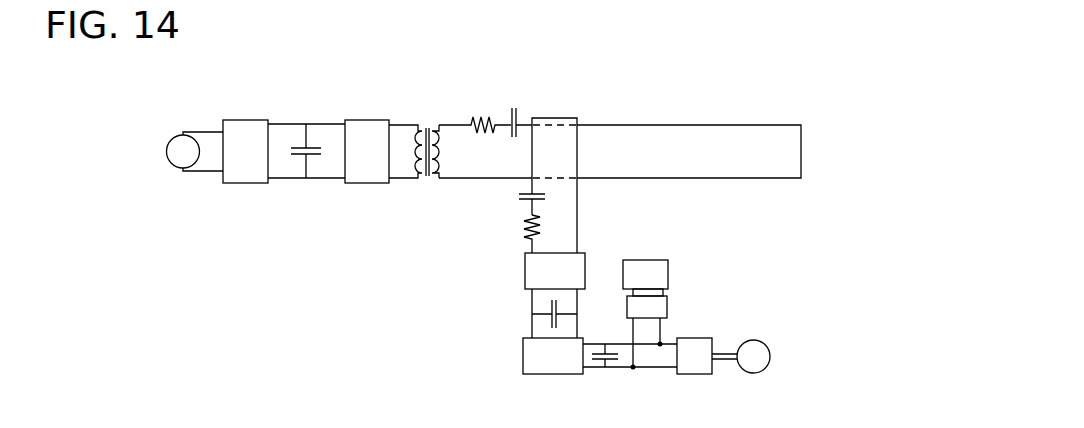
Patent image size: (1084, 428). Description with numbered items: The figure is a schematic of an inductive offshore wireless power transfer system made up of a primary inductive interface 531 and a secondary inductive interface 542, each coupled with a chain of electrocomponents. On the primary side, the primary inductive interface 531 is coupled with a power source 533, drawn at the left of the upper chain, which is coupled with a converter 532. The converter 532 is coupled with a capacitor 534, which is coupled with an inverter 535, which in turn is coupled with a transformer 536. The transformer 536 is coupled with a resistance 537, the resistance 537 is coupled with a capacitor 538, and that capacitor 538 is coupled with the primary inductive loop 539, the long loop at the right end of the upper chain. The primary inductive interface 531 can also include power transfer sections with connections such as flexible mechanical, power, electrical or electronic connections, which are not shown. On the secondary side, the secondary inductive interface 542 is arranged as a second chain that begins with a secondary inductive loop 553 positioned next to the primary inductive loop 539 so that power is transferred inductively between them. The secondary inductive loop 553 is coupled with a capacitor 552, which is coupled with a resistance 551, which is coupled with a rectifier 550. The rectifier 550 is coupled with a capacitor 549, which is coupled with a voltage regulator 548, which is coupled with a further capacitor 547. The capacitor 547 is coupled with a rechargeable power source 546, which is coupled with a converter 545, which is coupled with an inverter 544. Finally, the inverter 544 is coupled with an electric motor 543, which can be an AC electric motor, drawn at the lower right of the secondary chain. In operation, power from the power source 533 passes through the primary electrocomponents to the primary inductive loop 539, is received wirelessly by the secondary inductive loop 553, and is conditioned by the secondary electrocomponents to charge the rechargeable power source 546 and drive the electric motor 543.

The primary inductive interface 531 is at (784, 79).
The converter 532 is at (246, 120).
The power source 533 is at (177, 135).
The capacitor 534 is at (298, 124).
The inverter 535 is at (368, 120).
The transformer 536 is at (418, 125).
The resistance 537 is at (474, 117).
The capacitor 538 is at (517, 112).
The primary inductive loop 539 is at (622, 125).
The secondary inductive interface 542 is at (630, 185).
The electric motor 543 is at (770, 354).
The inverter 544 is at (695, 374).
The converter 545 is at (667, 306).
The rechargeable power source 546 is at (668, 274).
The capacitor 547 is at (603, 367).
The voltage regulator 548 is at (553, 374).
The capacitor 549 is at (532, 317).
The rectifier 550 is at (525, 270).
The resistance 551 is at (518, 228).
The capacitor 552 is at (516, 196).
The secondary inductive loop 553 is at (578, 231).